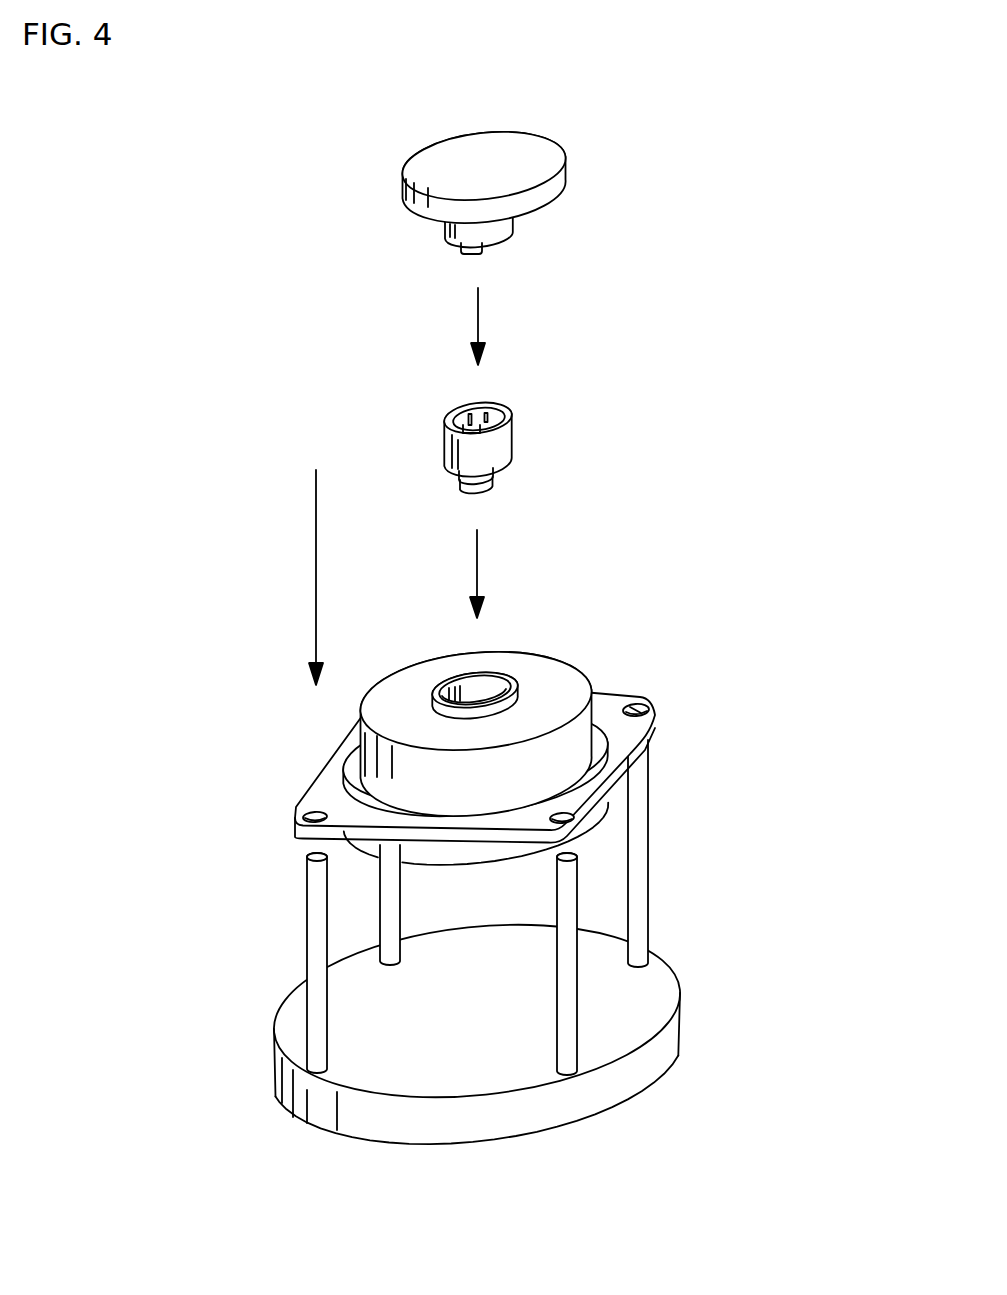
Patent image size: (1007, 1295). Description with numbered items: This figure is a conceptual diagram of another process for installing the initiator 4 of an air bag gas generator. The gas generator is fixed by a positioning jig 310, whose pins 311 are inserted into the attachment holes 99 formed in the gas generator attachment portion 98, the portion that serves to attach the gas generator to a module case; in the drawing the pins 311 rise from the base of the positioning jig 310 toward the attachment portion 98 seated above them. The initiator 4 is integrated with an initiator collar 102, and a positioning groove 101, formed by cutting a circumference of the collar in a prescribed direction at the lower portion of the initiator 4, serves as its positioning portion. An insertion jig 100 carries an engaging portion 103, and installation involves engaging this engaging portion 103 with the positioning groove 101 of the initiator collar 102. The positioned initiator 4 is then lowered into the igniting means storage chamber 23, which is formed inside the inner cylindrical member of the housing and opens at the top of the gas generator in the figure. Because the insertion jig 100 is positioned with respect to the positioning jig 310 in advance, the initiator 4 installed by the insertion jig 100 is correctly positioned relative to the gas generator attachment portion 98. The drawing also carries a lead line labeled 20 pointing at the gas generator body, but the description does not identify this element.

The insertion jig 100 is at (522, 149).
The engaging portion 103 is at (473, 256).
The positioning groove 101 is at (450, 424).
The initiator collar 102 is at (507, 445).
The initiator 4 is at (478, 478).
The igniting means storage chamber 23 is at (483, 687).
The attachment holes 99 is at (645, 700).
The gas generator attachment portion 98 is at (625, 736).
The motor 20 is at (350, 767).
The pins 311 is at (633, 885).
The positioning jig 310 is at (620, 1013).